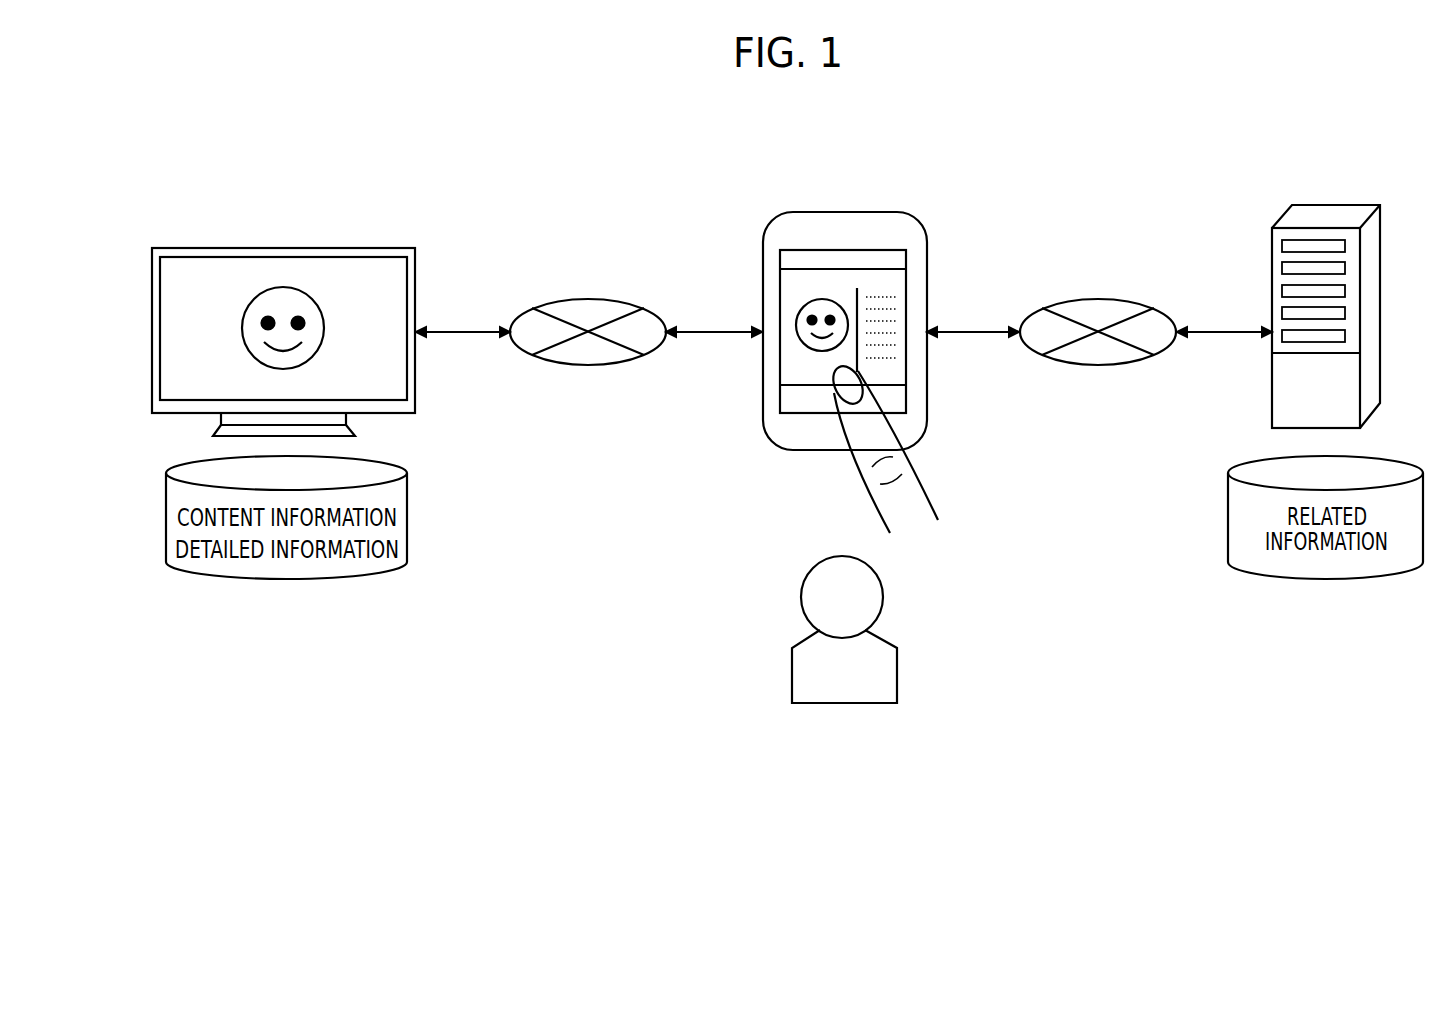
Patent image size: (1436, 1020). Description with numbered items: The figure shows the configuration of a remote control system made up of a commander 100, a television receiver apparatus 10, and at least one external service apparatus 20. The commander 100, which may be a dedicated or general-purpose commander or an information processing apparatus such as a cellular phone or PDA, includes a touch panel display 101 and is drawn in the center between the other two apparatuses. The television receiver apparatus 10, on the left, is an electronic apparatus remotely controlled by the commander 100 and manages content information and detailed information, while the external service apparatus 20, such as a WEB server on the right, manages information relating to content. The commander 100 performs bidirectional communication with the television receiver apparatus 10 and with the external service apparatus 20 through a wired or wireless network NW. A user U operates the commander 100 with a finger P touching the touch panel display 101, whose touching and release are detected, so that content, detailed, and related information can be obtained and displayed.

The television receiver apparatus 10 is at (341, 247).
The commander 100 is at (874, 312).
The touch panel display 101 is at (888, 302).
The external service apparatus 20 is at (1337, 205).
The network NW is at (589, 299).
The finger P is at (917, 473).
The user U is at (897, 665).